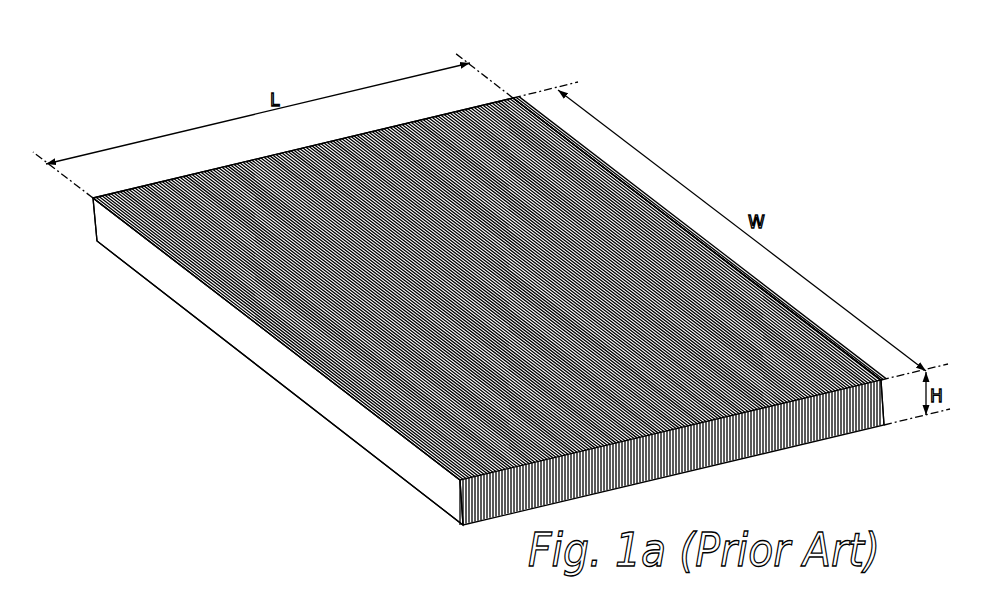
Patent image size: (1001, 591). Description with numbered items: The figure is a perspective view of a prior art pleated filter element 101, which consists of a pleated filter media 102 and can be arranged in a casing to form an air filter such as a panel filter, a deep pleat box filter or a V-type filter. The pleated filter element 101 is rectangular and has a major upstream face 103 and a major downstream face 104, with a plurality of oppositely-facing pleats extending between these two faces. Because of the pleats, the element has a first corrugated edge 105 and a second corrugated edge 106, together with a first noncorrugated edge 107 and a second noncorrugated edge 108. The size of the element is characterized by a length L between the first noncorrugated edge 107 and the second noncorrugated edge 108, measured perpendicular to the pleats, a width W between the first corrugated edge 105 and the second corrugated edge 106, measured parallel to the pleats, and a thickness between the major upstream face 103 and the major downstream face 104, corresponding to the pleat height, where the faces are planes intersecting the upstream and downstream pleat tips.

The pleated filter element 101 is at (146, 99).
The pleated filter media 102 is at (455, 498).
The major upstream face 103 is at (230, 258).
The major downstream face 104 is at (818, 434).
The first corrugated edge 105 is at (662, 450).
The second corrugated edge 106 is at (375, 122).
The first noncorrugated edge 107 is at (260, 349).
The second noncorrugated edge 108 is at (601, 160).